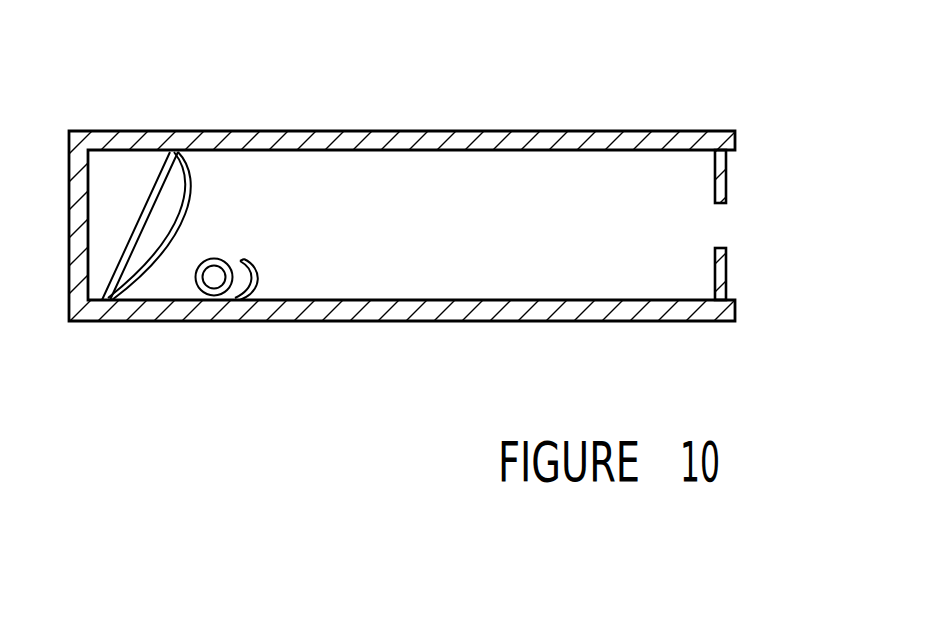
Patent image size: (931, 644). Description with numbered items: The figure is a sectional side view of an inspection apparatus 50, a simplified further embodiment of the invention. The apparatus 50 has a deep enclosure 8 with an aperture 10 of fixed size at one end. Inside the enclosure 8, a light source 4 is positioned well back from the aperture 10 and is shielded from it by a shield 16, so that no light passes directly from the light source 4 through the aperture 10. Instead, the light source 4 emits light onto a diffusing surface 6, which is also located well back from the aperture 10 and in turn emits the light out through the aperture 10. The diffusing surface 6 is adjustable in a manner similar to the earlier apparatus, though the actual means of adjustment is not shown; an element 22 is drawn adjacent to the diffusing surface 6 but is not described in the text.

The light source 4 is at (190, 290).
The diffusing surface 6 is at (190, 215).
The enclosure 8 is at (502, 130).
The aperture 10 is at (722, 228).
The shield 16 is at (255, 290).
The diagonal bar 22 is at (140, 212).
The inspection apparatus 50 is at (693, 93).